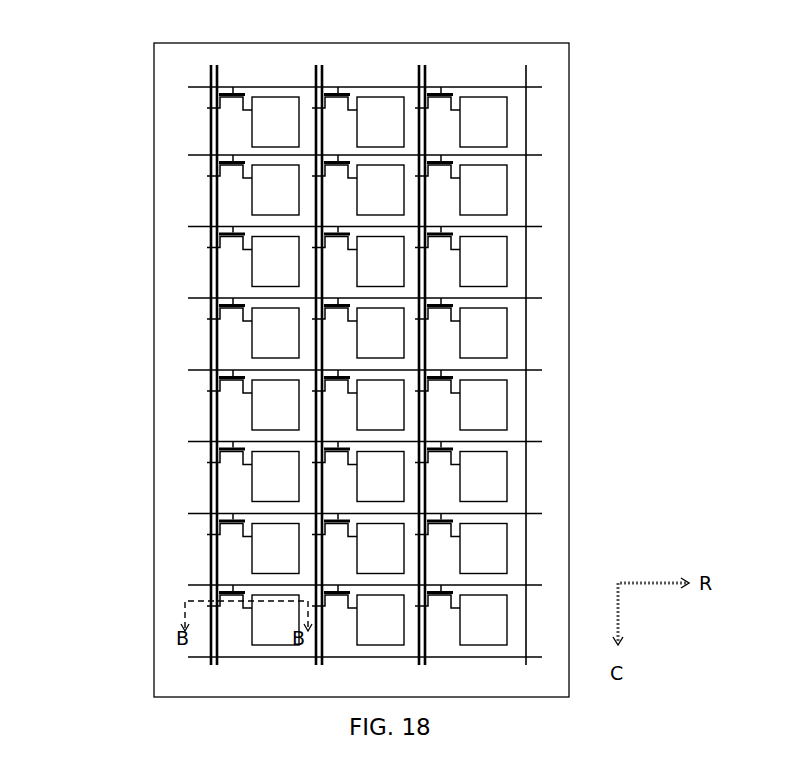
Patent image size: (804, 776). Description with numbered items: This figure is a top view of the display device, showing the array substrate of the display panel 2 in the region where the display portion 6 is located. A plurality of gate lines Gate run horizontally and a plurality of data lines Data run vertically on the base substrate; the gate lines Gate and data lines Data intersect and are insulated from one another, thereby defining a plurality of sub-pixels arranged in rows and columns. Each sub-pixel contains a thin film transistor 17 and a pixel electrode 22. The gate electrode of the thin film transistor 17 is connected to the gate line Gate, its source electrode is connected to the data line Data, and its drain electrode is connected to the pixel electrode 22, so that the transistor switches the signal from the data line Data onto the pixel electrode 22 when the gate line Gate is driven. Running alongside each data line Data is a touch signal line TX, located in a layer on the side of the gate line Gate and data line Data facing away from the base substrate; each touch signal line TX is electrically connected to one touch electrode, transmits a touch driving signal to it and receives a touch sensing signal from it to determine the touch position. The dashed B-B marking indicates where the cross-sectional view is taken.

The display panel 2 is at (155, 353).
The display portion 6 is at (187, 287).
The thin film transistor 17 is at (211, 175).
The pixel electrode 22 is at (250, 212).
The touch signal line TX is at (212, 83).
The data line Data is at (210, 136).
The gate line Gate is at (192, 228).